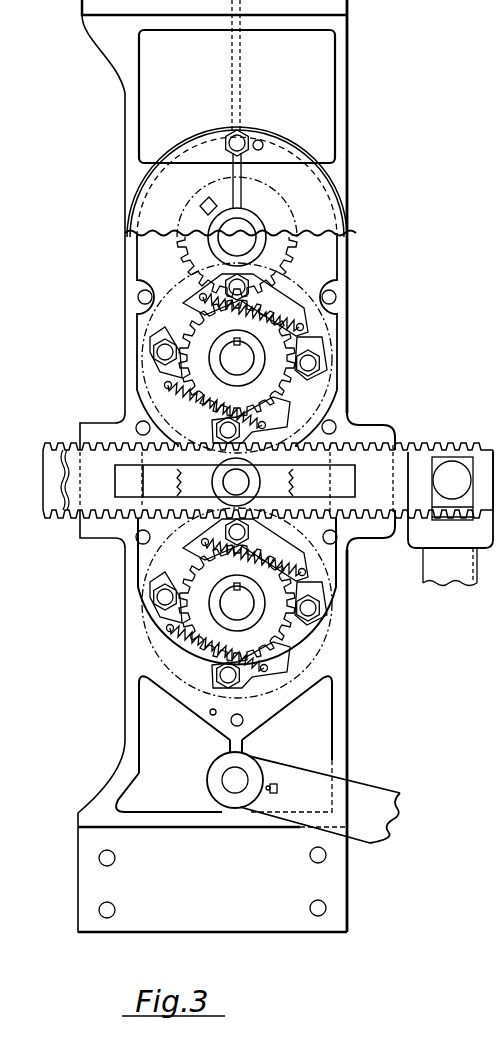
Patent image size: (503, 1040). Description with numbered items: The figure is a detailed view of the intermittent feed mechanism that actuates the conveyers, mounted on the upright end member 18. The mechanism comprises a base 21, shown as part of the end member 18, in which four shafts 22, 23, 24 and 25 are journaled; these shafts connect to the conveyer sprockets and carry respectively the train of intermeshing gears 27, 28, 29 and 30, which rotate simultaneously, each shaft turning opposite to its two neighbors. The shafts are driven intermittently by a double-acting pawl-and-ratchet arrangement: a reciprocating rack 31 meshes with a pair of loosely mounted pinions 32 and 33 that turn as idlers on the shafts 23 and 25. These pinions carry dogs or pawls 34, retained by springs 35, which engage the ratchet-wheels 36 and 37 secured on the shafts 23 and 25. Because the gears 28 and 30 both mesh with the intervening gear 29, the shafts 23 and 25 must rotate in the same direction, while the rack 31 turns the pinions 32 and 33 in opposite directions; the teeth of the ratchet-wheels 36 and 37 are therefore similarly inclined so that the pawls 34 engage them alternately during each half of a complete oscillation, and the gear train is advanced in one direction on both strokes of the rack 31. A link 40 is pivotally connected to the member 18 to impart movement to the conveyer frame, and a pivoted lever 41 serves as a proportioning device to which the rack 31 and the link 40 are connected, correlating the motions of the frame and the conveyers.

The end member 18 is at (237, 96).
The base 21 is at (213, 130).
The shaft 22 is at (240, 230).
The shaft 23 is at (229, 350).
The shaft 24 is at (228, 482).
The shaft 25 is at (240, 614).
The gear 27 is at (250, 237).
The gear 28 is at (268, 306).
The gear 29 is at (293, 483).
The gear 30 is at (292, 628).
The reciprocating rack 31 is at (398, 448).
The pinion 32 is at (312, 415).
The pinion 33 is at (318, 573).
The pawl 34 is at (155, 367).
The spring 35 is at (232, 407).
The ratchet-wheel 36 is at (289, 383).
The ratchet-wheel 37 is at (217, 652).
The link 40 is at (375, 793).
The lever 41 is at (452, 578).